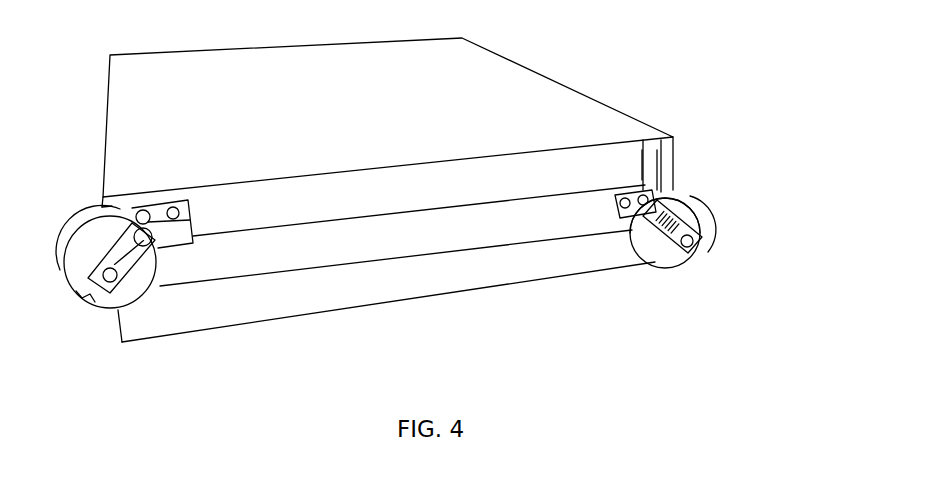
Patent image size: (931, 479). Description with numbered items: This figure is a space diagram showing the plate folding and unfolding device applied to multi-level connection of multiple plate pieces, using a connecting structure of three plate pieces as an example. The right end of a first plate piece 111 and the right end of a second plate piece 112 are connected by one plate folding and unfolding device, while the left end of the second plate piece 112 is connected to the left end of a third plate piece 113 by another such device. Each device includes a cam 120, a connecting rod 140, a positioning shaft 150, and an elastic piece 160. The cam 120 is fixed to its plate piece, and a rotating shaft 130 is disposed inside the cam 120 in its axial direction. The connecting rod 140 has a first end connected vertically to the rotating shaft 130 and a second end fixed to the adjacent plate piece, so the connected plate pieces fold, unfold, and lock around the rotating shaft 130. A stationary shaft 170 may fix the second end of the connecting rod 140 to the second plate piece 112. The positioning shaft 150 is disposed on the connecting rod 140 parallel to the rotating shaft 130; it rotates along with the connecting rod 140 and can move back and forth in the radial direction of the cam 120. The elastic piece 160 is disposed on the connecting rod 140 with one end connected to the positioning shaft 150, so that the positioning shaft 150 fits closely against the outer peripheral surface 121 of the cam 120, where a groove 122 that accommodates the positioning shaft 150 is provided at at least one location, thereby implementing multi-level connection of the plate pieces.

The first plate piece 111 is at (408, 285).
The second plate piece 112 is at (375, 247).
The third plate piece 113 is at (478, 73).
The cam 120 is at (707, 230).
The outer peripheral surface 121 is at (667, 200).
The groove 122 is at (695, 250).
The rotating shaft 130 is at (678, 263).
The connecting rod 140 is at (667, 183).
The positioning shaft 150 is at (657, 190).
The elastic piece 160 is at (687, 227).
The stationary shaft 170 is at (642, 180).